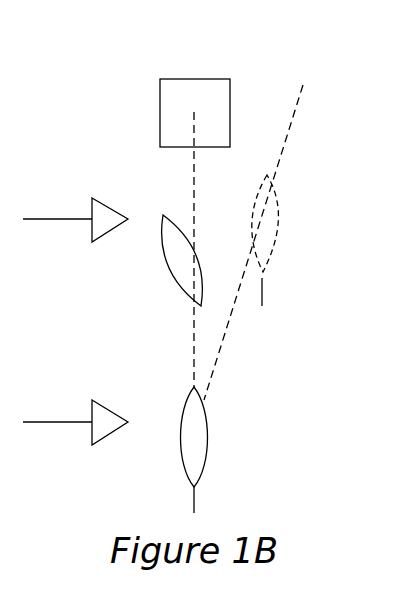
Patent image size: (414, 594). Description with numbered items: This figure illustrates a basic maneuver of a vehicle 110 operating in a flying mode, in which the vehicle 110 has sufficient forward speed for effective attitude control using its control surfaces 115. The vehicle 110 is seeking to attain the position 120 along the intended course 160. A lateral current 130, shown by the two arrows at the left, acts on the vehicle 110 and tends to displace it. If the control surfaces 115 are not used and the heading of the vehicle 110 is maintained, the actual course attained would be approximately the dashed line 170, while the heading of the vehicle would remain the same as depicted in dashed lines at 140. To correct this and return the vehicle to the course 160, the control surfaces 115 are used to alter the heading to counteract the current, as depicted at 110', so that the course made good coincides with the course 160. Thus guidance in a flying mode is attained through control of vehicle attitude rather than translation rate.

The position 120 is at (200, 79).
The course 160 is at (194, 170).
The actual course 170 is at (290, 128).
The vehicle heading 140 is at (276, 217).
The altered vehicle heading 110' is at (146, 260).
The vehicle 110 is at (231, 437).
The control surfaces 115 is at (196, 503).
The lateral current 130 is at (58, 219).